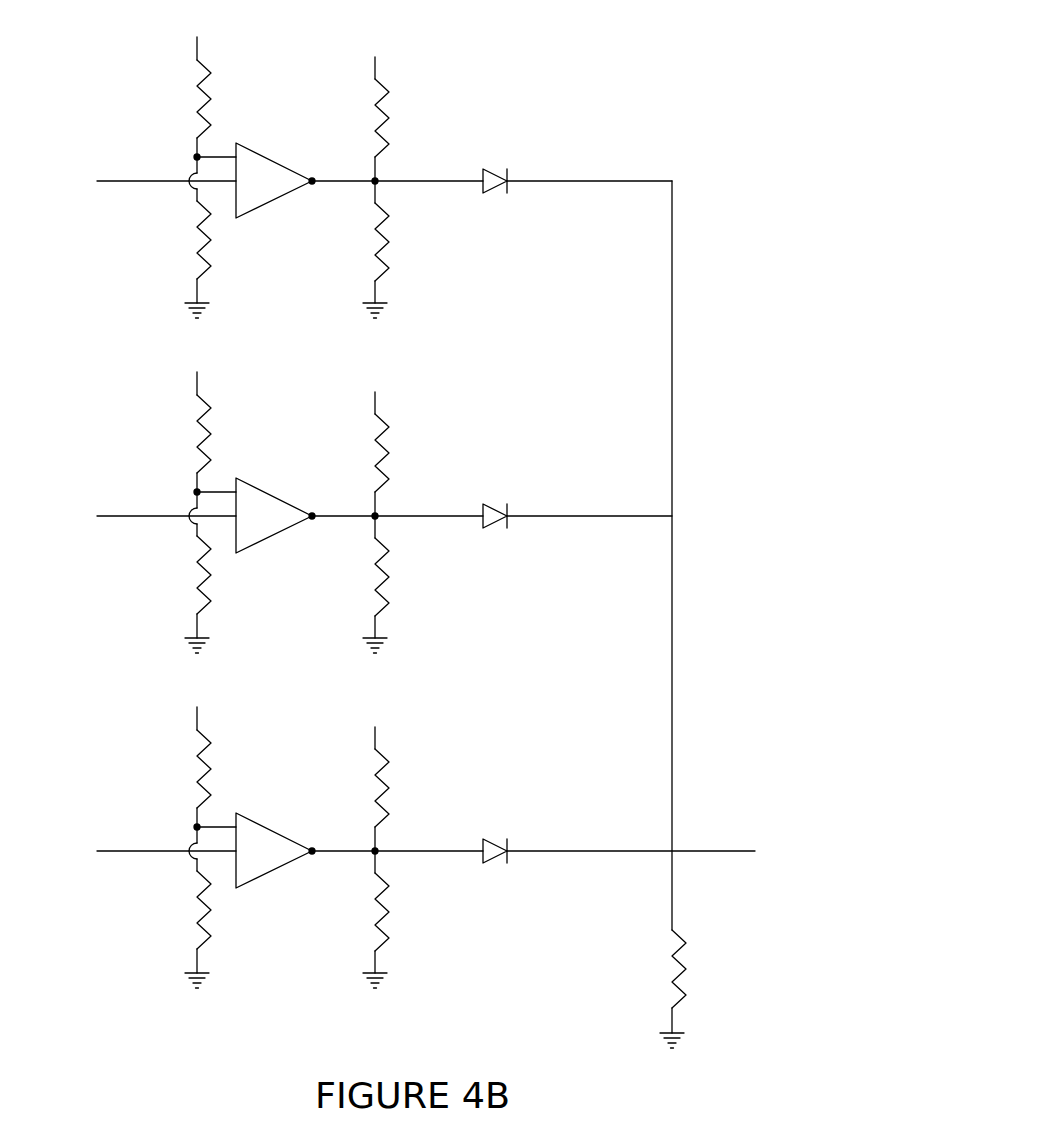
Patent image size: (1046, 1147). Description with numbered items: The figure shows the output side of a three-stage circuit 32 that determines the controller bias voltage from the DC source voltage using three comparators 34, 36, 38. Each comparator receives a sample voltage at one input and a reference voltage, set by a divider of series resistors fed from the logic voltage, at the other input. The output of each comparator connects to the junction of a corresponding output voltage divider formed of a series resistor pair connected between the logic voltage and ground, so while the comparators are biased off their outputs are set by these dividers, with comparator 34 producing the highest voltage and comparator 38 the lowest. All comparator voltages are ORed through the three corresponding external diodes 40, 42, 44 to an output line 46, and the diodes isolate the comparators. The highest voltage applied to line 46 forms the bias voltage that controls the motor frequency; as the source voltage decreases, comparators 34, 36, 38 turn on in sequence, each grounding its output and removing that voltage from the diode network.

The three-stage circuit 32 is at (66, 65).
The comparator 34 is at (276, 193).
The comparator 36 is at (276, 528).
The comparator 38 is at (276, 863).
The external diode 40 is at (504, 152).
The external diode 42 is at (504, 487).
The external diode 44 is at (504, 822).
The output line 46 is at (688, 448).